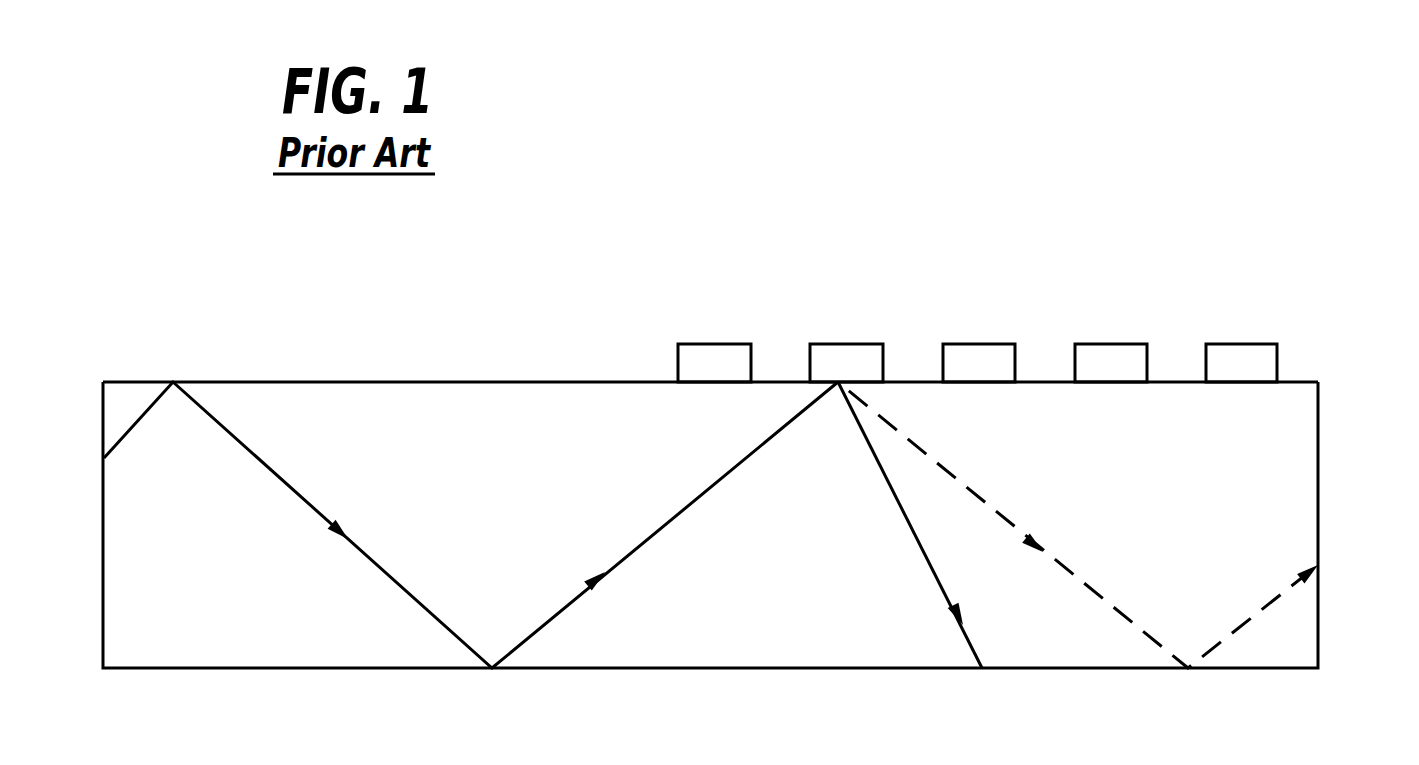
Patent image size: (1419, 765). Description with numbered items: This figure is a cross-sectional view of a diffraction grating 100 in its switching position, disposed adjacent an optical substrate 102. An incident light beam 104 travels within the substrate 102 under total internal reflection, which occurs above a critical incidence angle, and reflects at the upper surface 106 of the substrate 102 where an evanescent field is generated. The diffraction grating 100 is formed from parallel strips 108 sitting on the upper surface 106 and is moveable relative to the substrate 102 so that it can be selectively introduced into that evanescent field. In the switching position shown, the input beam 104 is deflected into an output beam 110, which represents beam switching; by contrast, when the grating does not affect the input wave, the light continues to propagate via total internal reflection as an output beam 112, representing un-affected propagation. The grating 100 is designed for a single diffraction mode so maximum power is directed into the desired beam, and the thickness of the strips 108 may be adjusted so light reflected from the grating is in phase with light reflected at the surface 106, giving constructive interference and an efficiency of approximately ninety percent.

The diffraction grating 100 is at (1088, 212).
The optical substrate 102 is at (1305, 646).
The incident light beam 104 is at (365, 548).
The upper surface 106 is at (1313, 378).
The parallel strips 108 is at (735, 343).
The output beam 110 is at (972, 645).
The output beam 112 is at (962, 480).